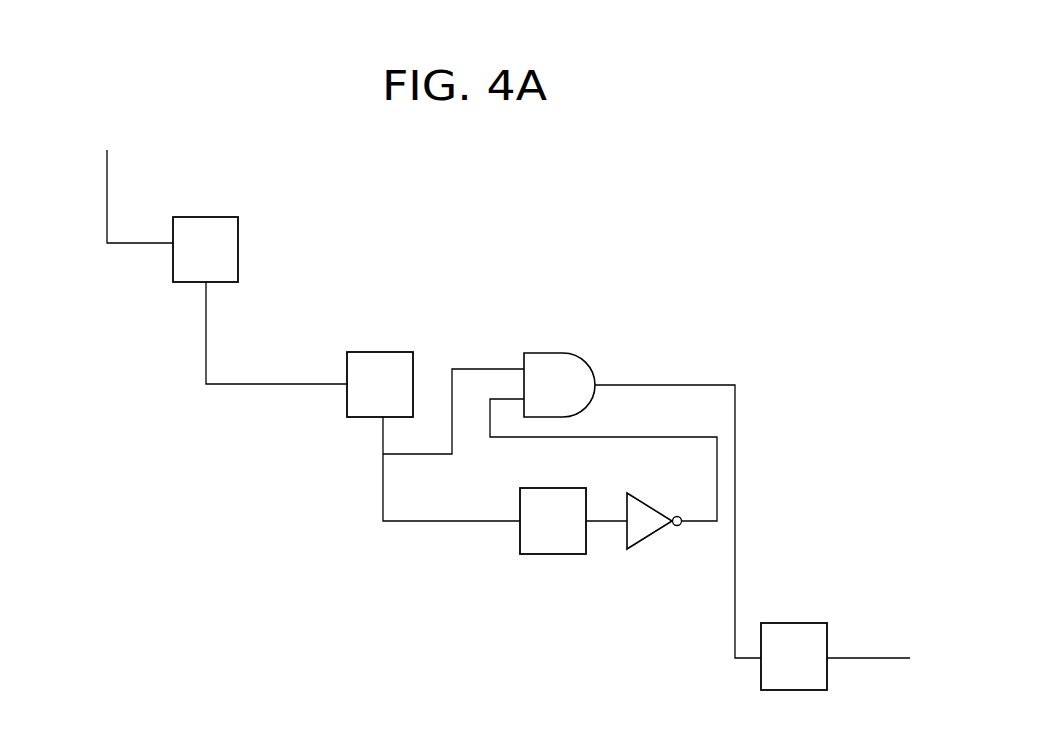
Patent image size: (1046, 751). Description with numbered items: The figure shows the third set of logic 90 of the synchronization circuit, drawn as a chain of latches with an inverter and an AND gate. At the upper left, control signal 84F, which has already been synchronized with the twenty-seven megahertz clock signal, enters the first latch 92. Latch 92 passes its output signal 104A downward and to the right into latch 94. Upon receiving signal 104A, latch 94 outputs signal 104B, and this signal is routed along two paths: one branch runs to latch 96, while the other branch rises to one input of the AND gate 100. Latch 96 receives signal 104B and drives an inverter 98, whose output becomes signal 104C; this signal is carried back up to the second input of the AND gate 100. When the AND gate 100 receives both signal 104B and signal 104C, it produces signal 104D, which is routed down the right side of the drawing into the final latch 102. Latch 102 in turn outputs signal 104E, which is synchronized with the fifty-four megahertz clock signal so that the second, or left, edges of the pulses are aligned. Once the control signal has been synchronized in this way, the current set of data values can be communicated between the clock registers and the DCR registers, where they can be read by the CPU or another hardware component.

The control signal 84F is at (107, 169).
The third set of logic 90 is at (263, 482).
The latch 92 is at (213, 217).
The latch 94 is at (383, 352).
The latch 96 is at (553, 488).
The inverter 98 is at (652, 510).
The AND gate 100 is at (571, 354).
The latch 102 is at (820, 623).
The signal 104A is at (206, 303).
The signal 104B is at (383, 439).
The signal 104C is at (700, 521).
The signal 104D is at (674, 385).
The signal 104E is at (866, 658).